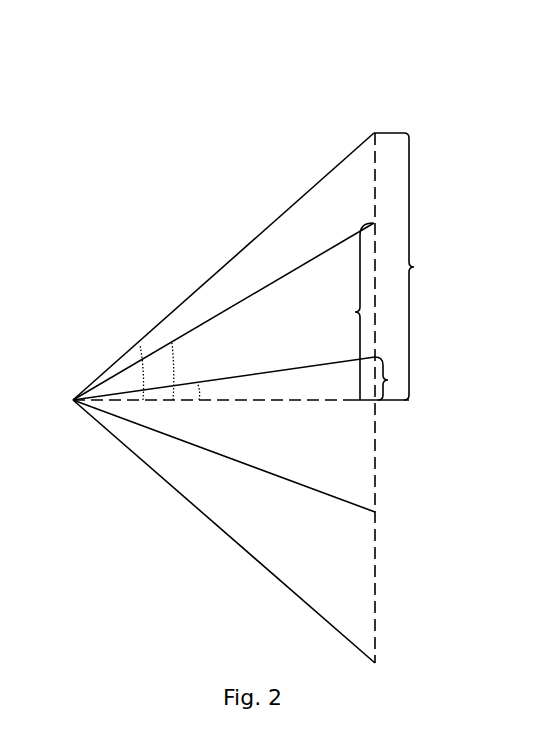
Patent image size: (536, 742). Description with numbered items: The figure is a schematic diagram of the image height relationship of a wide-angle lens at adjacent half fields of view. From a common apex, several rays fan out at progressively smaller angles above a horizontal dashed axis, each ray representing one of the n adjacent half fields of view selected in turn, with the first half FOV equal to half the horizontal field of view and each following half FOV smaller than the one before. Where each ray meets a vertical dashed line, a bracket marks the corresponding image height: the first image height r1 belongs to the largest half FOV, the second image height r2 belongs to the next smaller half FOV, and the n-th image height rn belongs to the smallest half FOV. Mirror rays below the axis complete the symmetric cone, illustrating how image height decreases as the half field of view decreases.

The image height corresponding to half FOV θ1 r1 is at (445, 267).
The image height corresponding to half FOV θ2 r2 is at (355, 312).
The image height corresponding to half FOV θn rn is at (397, 380).